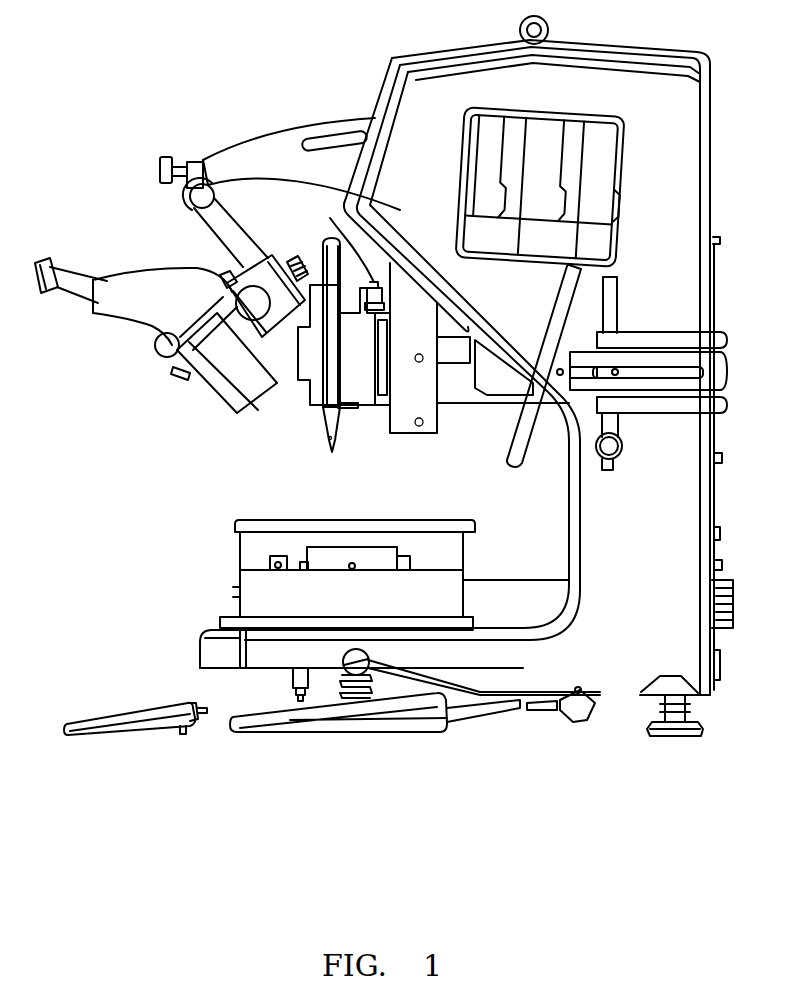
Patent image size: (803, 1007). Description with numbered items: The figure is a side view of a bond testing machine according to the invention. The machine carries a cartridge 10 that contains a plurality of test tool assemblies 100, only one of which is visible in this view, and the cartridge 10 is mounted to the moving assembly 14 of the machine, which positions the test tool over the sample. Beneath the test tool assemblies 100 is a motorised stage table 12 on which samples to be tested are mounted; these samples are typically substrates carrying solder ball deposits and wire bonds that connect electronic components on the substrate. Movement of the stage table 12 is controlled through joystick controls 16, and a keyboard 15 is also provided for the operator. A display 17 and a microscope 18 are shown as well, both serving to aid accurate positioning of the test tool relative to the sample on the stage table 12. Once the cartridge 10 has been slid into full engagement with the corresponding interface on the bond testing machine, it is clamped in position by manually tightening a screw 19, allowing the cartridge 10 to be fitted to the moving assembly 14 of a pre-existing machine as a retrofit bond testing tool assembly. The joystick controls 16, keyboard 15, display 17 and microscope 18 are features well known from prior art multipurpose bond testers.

The cartridge 10 is at (297, 412).
The motorised stage table 12 is at (356, 522).
The moving assembly 14 is at (390, 343).
The keyboard 15 is at (120, 722).
The joystick controls 16 is at (343, 672).
The display 17 is at (522, 448).
The microscope 18 is at (215, 393).
The screw 19 is at (330, 218).
The test tool assemblies 100 is at (324, 431).